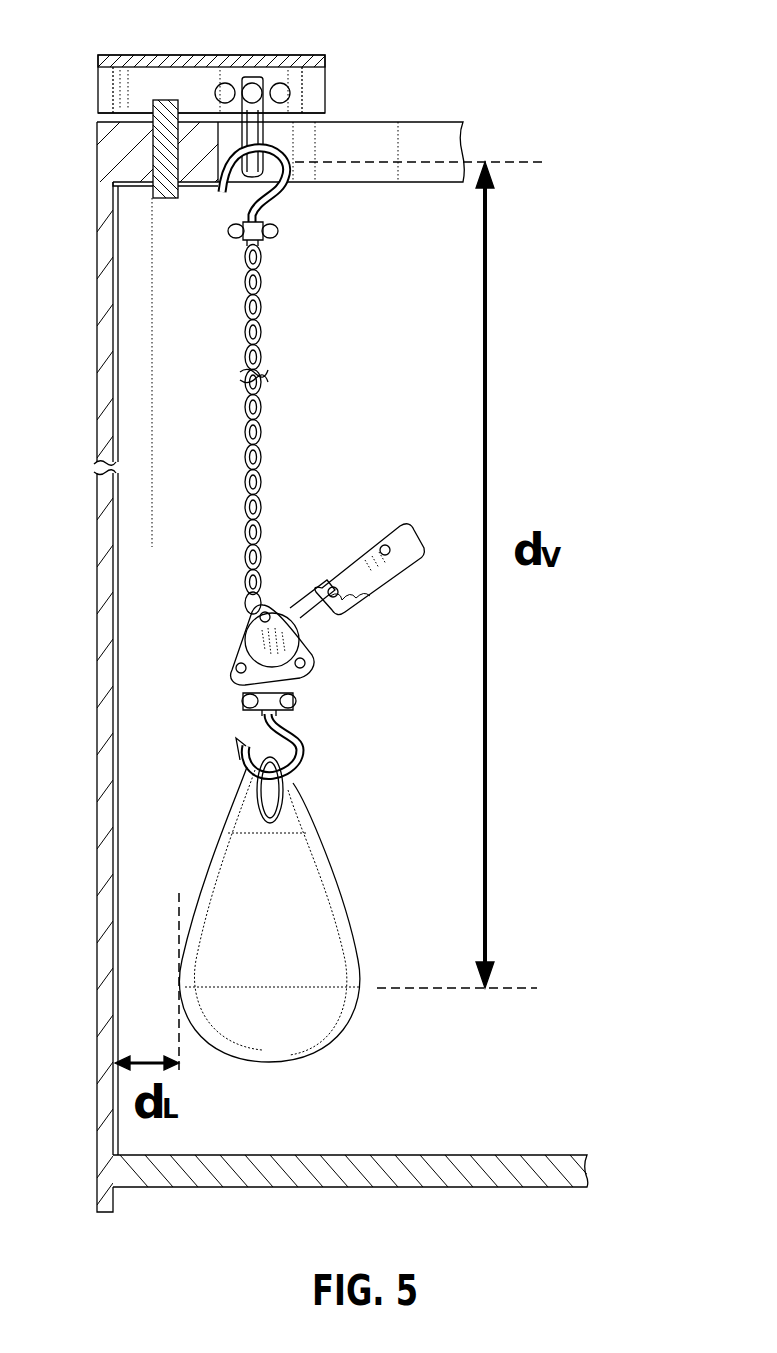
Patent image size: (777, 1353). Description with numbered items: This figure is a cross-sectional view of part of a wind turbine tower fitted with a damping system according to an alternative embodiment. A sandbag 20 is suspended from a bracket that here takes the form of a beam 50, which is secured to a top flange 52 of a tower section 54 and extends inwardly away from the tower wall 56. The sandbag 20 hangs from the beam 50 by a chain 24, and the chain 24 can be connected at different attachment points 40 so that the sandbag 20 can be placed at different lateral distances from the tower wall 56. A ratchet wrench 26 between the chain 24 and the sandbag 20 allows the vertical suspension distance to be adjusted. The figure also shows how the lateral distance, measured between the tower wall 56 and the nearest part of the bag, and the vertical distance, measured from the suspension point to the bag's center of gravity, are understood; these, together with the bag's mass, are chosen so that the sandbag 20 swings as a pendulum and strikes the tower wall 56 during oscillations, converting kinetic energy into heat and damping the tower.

The sandbag 20 is at (326, 865).
The chain 24 is at (262, 320).
The ratchet wrench 26 is at (314, 660).
The attachment points 40 is at (291, 86).
The beam 50 is at (168, 55).
The top flange 52 is at (97, 148).
The tower section 54 is at (97, 277).
The tower wall 56 is at (113, 372).